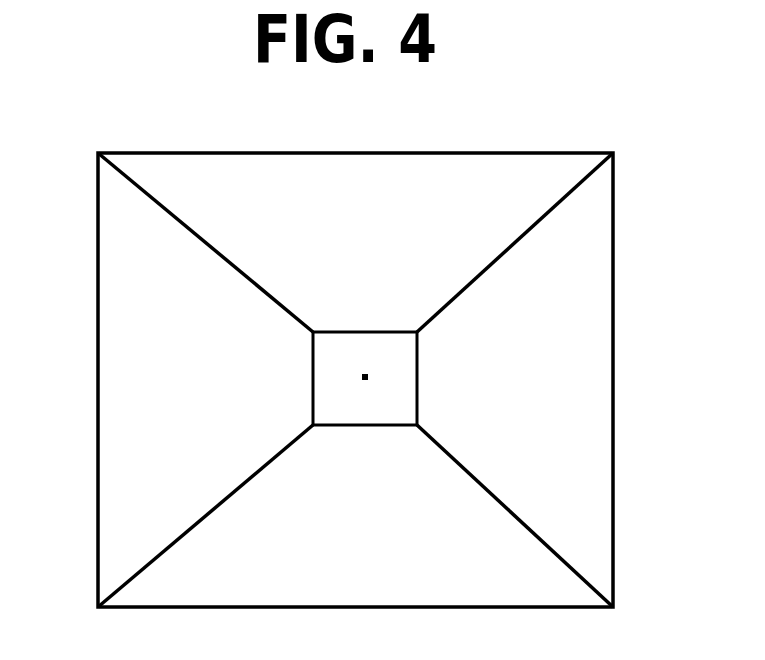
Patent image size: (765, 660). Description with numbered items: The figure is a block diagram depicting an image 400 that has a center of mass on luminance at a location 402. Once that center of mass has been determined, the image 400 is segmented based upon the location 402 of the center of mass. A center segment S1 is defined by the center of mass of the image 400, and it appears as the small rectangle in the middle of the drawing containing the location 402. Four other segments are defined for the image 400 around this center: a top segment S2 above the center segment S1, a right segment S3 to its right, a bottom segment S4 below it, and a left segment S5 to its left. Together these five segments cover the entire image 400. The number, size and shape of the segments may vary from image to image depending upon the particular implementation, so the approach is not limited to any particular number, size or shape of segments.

The image 400 is at (87, 111).
The location 402 is at (368, 377).
The center segment S1 is at (359, 417).
The top segment S2 is at (384, 255).
The right segment S3 is at (554, 390).
The bottom segment S4 is at (383, 542).
The left segment S5 is at (209, 392).